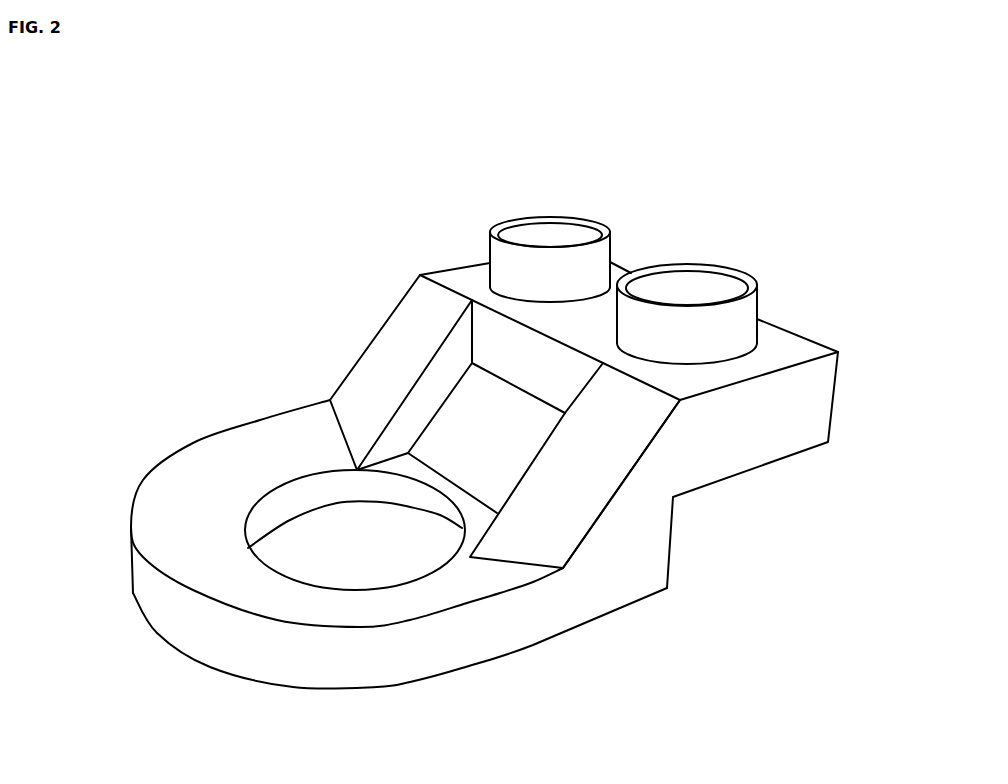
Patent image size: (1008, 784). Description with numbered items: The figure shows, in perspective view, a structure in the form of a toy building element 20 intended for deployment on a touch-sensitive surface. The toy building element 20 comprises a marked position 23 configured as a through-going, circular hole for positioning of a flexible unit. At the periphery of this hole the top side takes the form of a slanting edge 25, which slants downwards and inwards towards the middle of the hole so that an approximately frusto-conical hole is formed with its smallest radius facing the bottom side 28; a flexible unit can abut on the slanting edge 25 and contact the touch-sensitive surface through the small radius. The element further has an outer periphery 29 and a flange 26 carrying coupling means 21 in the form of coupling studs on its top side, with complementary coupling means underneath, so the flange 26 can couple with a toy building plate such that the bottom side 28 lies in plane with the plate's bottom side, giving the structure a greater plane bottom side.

The toy building element 20 is at (316, 289).
The coupling means 21 is at (720, 275).
The marked position 23 is at (307, 527).
The slanting edge 25 is at (183, 505).
The flange 26 is at (807, 418).
The bottom side 28 is at (533, 645).
The outer periphery 29 is at (578, 598).